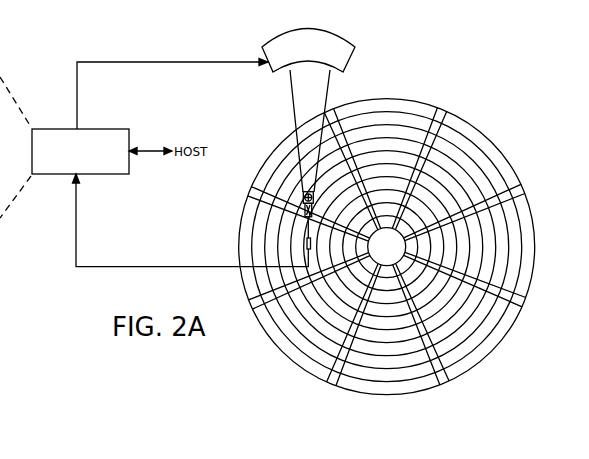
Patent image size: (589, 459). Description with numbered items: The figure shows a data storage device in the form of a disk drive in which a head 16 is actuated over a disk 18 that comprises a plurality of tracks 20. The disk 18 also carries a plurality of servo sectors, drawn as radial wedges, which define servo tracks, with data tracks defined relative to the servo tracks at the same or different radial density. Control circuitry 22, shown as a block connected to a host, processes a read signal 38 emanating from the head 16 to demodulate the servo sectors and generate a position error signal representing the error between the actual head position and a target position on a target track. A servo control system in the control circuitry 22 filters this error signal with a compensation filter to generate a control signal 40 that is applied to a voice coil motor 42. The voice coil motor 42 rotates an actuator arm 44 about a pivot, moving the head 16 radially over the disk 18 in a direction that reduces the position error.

The head 16 is at (305, 243).
The disk 18 is at (488, 134).
The tracks 20 is at (387, 116).
The control circuitry 22 is at (105, 129).
The read signal 38 is at (147, 267).
The control signal 40 is at (77, 99).
The voice coil motor 42 is at (273, 72).
The actuator arm 44 is at (298, 120).